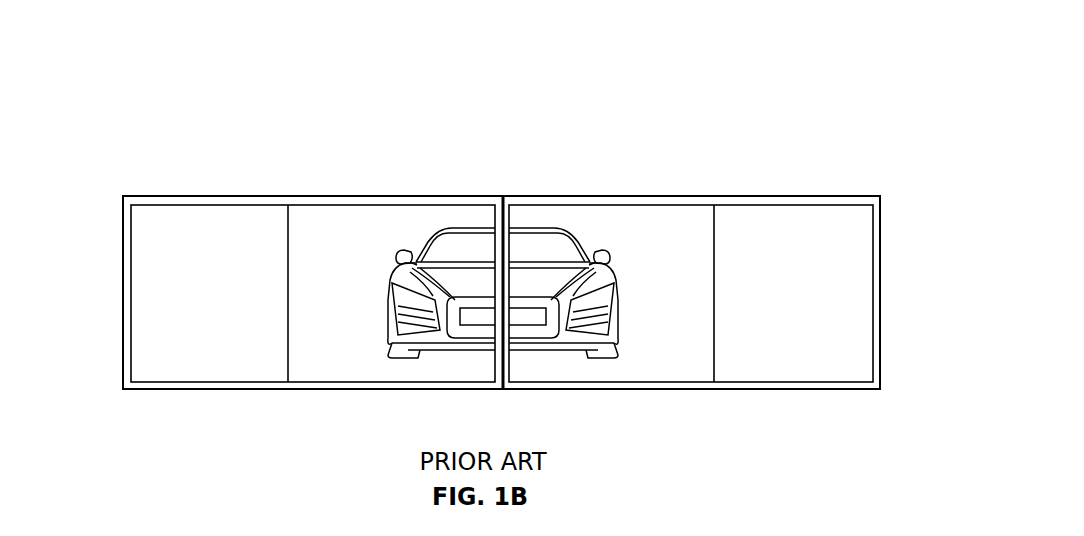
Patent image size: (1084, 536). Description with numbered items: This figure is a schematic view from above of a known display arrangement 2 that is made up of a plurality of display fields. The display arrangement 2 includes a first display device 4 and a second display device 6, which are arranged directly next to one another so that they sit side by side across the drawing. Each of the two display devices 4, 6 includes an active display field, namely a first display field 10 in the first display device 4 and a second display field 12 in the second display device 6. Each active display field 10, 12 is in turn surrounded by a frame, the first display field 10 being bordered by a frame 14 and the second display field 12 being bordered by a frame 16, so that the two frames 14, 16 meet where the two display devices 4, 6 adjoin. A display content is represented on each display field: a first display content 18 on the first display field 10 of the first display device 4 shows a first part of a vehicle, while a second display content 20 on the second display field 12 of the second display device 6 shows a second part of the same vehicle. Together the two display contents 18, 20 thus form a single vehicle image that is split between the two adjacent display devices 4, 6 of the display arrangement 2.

The display arrangement 2 is at (850, 112).
The first display device 4 is at (285, 165).
The second display device 6 is at (718, 165).
The first display field 10 is at (248, 355).
The second display field 12 is at (782, 360).
The frame 14 is at (127, 265).
The frame 16 is at (875, 267).
The first display content 18 is at (323, 270).
The second display content 20 is at (651, 270).